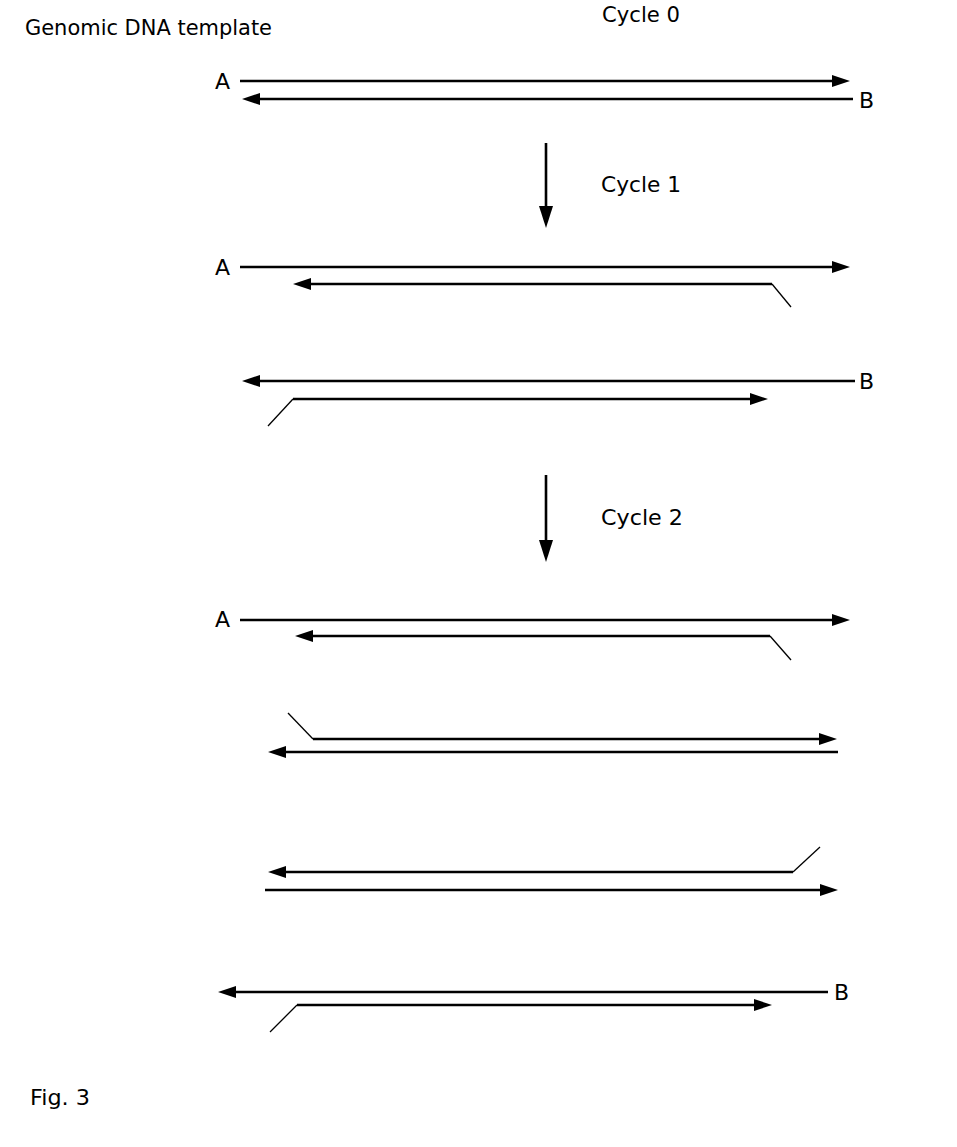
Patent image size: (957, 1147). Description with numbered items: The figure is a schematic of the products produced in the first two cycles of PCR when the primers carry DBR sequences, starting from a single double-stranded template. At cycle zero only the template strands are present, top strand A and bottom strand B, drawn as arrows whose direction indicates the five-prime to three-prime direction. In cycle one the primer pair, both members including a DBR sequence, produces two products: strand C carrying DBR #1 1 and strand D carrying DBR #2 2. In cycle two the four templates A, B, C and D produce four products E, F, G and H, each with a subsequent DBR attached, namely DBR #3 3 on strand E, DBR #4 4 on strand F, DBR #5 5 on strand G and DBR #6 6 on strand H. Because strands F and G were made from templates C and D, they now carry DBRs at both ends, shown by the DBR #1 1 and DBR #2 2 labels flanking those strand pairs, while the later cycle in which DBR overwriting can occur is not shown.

The DBR # 1 is at (564, 528).
The DBR # 2 is at (538, 657).
The DBR # 3 is at (550, 657).
The DBR # 4 is at (559, 718).
The DBR # 5 is at (546, 851).
The DBR # 6 is at (516, 1028).